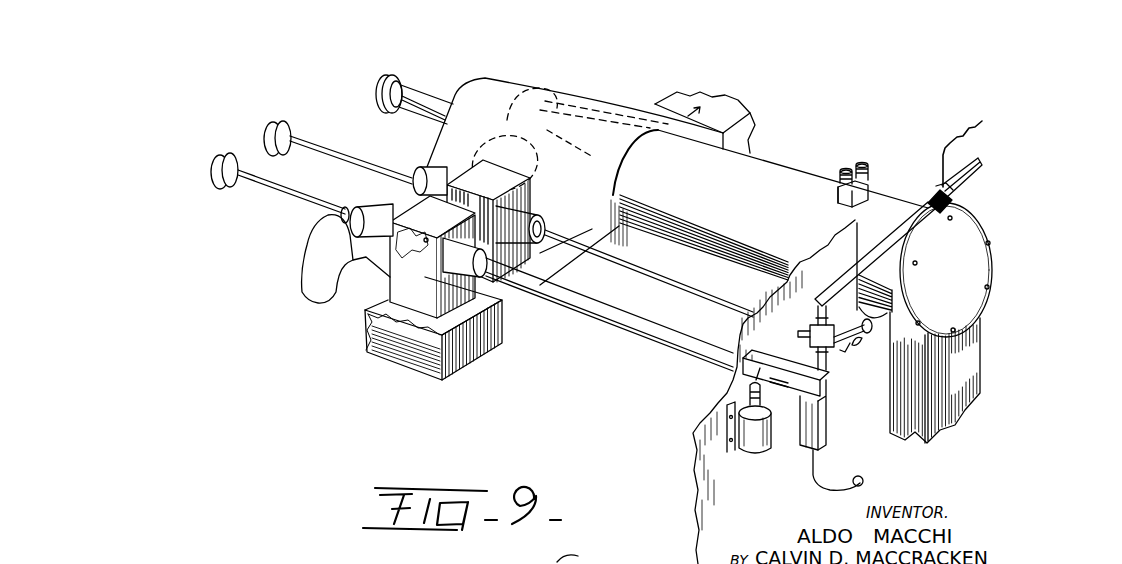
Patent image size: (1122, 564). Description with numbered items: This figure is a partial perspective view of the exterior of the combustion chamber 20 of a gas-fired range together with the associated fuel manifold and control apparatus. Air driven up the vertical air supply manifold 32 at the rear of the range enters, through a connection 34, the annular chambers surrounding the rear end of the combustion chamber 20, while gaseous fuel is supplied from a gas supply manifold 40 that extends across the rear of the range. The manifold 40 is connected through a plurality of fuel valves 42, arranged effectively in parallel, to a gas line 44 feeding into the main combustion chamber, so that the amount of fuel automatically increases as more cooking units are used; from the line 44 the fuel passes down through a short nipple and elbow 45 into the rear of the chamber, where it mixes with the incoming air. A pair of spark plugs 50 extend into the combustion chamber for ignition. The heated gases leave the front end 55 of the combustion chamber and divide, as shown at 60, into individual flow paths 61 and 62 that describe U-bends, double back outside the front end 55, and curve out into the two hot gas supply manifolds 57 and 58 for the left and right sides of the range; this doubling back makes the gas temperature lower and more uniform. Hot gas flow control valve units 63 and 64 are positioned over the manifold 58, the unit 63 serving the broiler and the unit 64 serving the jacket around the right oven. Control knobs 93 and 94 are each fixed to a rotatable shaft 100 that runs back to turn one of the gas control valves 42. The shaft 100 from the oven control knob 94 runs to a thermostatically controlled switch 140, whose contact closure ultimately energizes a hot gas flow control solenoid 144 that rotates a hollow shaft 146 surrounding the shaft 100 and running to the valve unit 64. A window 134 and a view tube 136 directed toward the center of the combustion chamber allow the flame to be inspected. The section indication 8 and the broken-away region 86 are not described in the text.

The section line 8- 8 is at (400, 170).
The combustion chamber 20 is at (812, 141).
The vertical air supply manifold 32 is at (940, 413).
The connection 34 is at (898, 303).
The gas supply manifold 40 is at (866, 340).
The fuel valves 42 is at (797, 333).
The gas line 44 is at (848, 272).
The nipple and elbow 45 is at (953, 210).
The spark plugs 50 is at (847, 170).
The front end of the combustion chamber 55 is at (549, 97).
The hot gas supply manifold 57 is at (673, 100).
The hot gas supply manifold 58 is at (467, 357).
The division of hot gases 60 is at (507, 127).
The flow path 61 is at (603, 102).
The flow path 62 is at (577, 224).
The hot gas flow control valve unit 63 is at (520, 253).
The hot gas flow control valve unit 64 is at (457, 293).
The guide web 86 is at (310, 267).
The control knob 93 is at (278, 122).
The oven control knob 94 is at (223, 153).
The rotatable shaft 100 is at (307, 145).
The window 134 is at (380, 82).
The view tube 136 is at (413, 88).
The thermostatically controlled switch 140 is at (807, 433).
The hot gas flow control solenoid 144 is at (757, 450).
The hollow shaft 146 is at (612, 322).